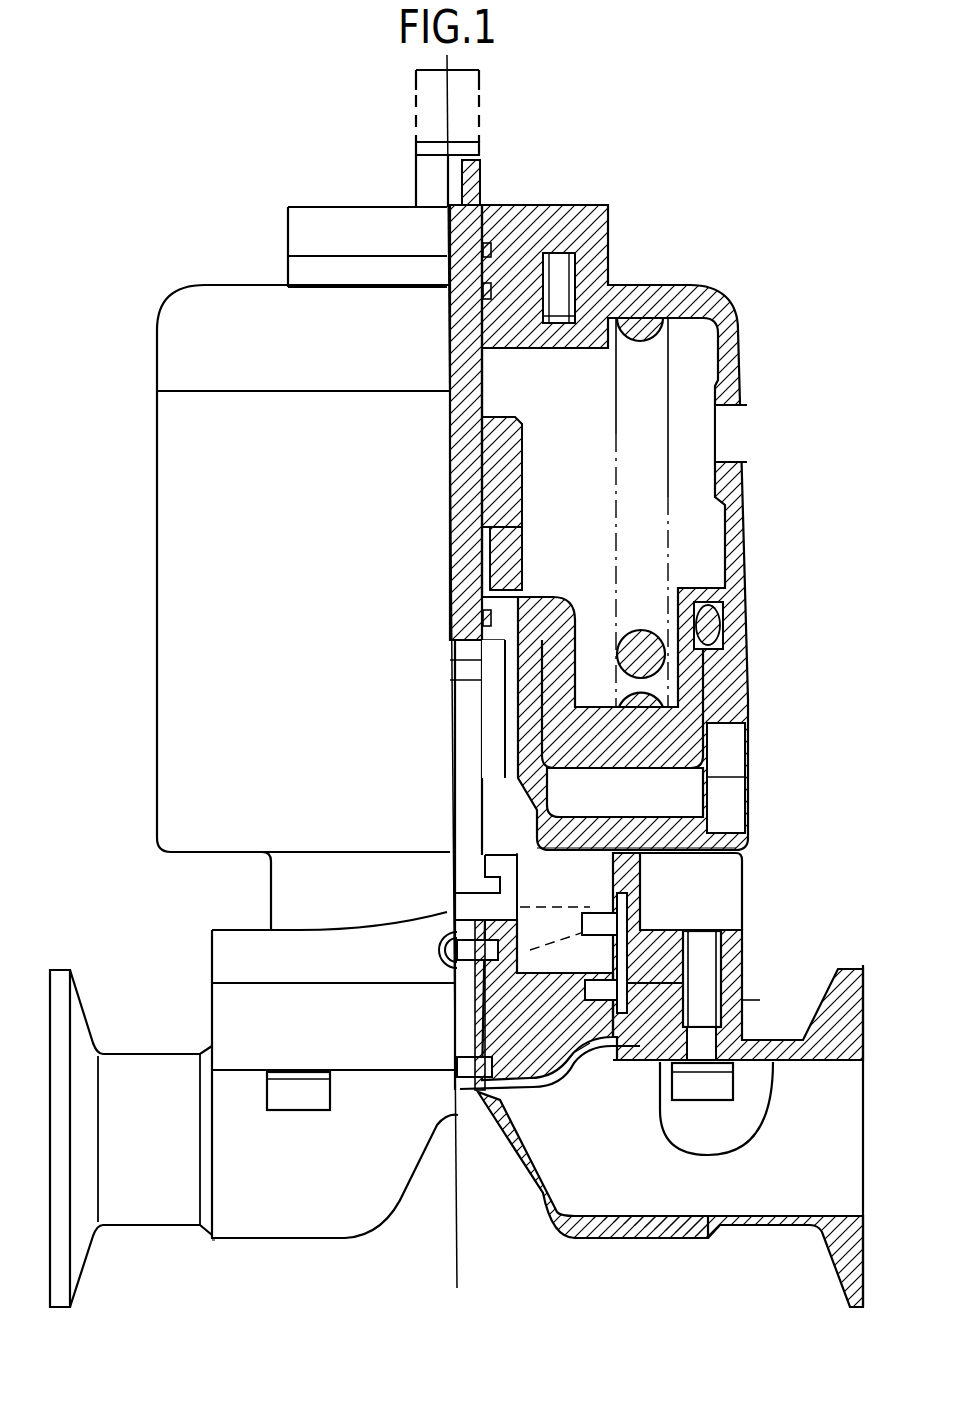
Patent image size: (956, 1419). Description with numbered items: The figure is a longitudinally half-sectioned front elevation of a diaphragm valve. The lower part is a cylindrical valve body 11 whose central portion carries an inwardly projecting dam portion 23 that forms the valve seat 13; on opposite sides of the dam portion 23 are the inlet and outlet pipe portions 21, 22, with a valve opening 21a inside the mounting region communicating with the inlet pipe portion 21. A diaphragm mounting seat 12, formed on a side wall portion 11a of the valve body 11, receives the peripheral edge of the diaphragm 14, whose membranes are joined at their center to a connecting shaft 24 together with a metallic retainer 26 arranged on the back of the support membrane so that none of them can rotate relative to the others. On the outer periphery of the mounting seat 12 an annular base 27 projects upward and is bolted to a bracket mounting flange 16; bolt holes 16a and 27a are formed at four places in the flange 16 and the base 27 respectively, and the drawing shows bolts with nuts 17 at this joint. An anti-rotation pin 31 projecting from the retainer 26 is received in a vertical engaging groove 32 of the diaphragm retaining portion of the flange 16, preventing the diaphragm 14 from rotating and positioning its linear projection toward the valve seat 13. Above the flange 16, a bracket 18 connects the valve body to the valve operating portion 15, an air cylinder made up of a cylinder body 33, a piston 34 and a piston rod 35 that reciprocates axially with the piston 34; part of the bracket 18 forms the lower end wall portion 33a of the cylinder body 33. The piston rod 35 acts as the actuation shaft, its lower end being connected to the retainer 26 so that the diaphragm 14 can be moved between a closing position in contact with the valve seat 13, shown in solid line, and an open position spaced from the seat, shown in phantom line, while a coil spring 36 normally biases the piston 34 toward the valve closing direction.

The valve body 11 is at (300, 1245).
The side wall portion 11a is at (213, 1043).
The diaphragm mounting seat 12 is at (638, 1060).
The valve seat 13 is at (455, 1048).
The diaphragm 14 is at (543, 1090).
The valve operating portion 15 is at (737, 301).
The bracket mounting flange 16 is at (650, 953).
The bolt holes 16a is at (740, 929).
The fastening bolt nut 17 is at (713, 1087).
The bracket 18 is at (300, 875).
The inlet pipe portion 21 is at (757, 1222).
The valve opening 21a is at (567, 1073).
The outlet pipe portion 22 is at (352, 1222).
The dam portion 23 is at (507, 1160).
The connecting shaft 24 is at (455, 1005).
The retainer 26 is at (537, 975).
The annular base 27 is at (730, 999).
The bolt holes 27a is at (729, 1003).
The anti-rotation pin 31 is at (600, 967).
The engaging groove 32 is at (633, 900).
The cylinder body 33 is at (735, 547).
The lower end wall portion 33a is at (593, 837).
The piston 34 is at (660, 735).
The piston rod 35 is at (470, 712).
The coil spring 36 is at (647, 656).